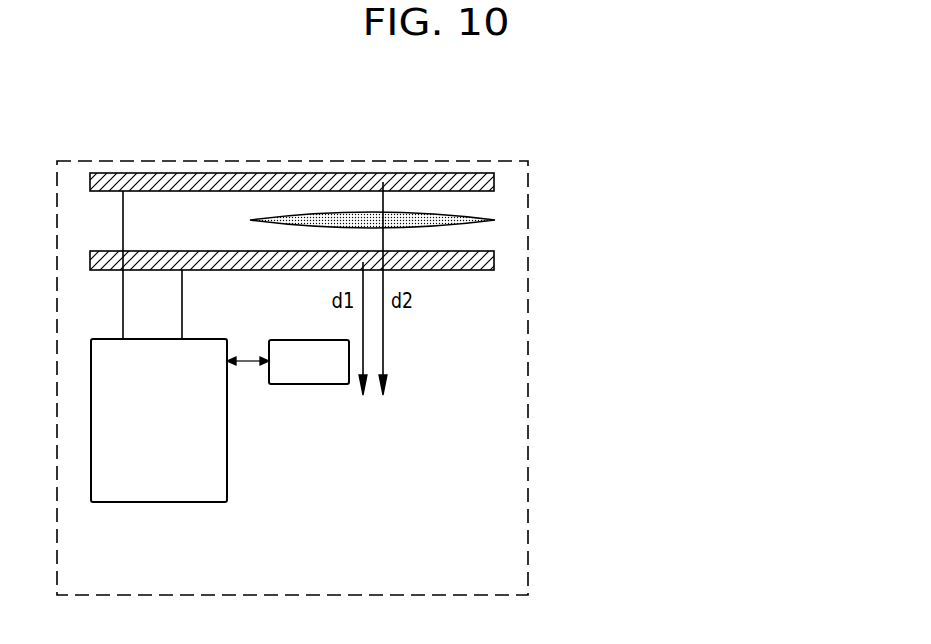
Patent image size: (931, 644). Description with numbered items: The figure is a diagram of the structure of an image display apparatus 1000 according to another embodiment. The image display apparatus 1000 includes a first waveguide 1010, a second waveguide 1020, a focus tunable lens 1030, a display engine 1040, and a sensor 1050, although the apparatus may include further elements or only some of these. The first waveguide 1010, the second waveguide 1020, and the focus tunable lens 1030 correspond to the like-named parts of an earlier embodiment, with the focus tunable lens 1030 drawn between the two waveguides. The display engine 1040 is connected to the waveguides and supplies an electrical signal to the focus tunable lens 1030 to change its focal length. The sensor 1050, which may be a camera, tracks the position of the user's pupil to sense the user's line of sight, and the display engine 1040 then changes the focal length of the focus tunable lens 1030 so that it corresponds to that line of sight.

The image display apparatus 1000 is at (463, 158).
The first waveguide 1010 is at (494, 260).
The second waveguide 1020 is at (494, 183).
The focus tunable lens 1030 is at (495, 220).
The display engine 1040 is at (159, 346).
The sensor 1050 is at (307, 384).